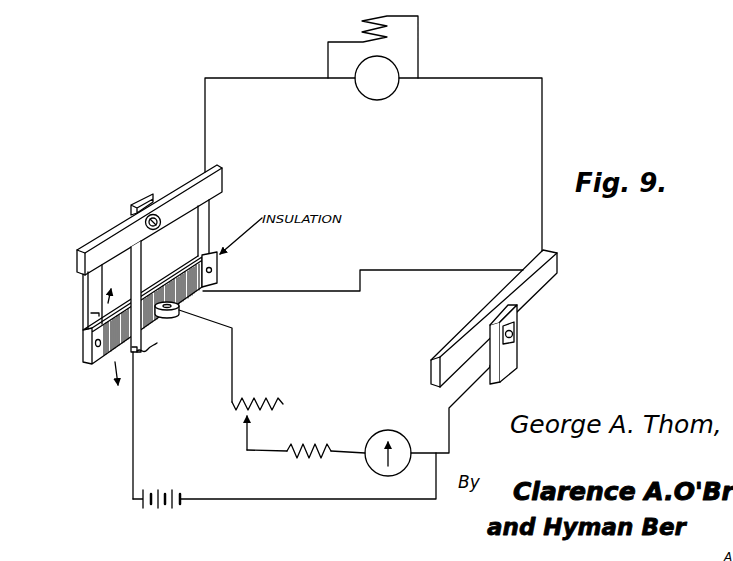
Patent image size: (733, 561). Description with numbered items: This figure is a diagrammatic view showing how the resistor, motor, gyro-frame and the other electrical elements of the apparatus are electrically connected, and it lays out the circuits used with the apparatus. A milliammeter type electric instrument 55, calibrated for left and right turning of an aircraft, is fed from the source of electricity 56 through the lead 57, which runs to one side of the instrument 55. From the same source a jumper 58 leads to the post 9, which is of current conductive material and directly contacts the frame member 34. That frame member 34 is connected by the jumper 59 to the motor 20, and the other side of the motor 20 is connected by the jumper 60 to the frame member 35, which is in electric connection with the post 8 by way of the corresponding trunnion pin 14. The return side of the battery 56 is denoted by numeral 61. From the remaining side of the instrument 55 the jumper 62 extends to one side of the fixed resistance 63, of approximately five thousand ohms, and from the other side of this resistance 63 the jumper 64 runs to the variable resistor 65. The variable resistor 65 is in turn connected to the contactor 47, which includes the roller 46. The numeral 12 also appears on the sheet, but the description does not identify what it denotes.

The heating element 12 is at (402, 39).
The post 8 is at (138, 197).
The post 9 is at (513, 352).
The trunnion pin 14 is at (157, 227).
The motor 20 is at (377, 97).
The frame member 34 is at (548, 283).
The frame member 35 is at (190, 182).
The roller 46 is at (175, 317).
The contactor 47 is at (225, 322).
The milliammeter type electric instrument 55 is at (390, 431).
The source of electricity 56 is at (164, 483).
The lead 57 is at (307, 500).
The jumper 58 is at (450, 418).
The jumper 59 is at (544, 132).
The jumper 60 is at (203, 103).
The return side 61 is at (135, 417).
The jumper 62 is at (343, 450).
The fixed resistance 63 is at (303, 457).
The jumper 64 is at (247, 450).
The variable resistor 65 is at (264, 394).